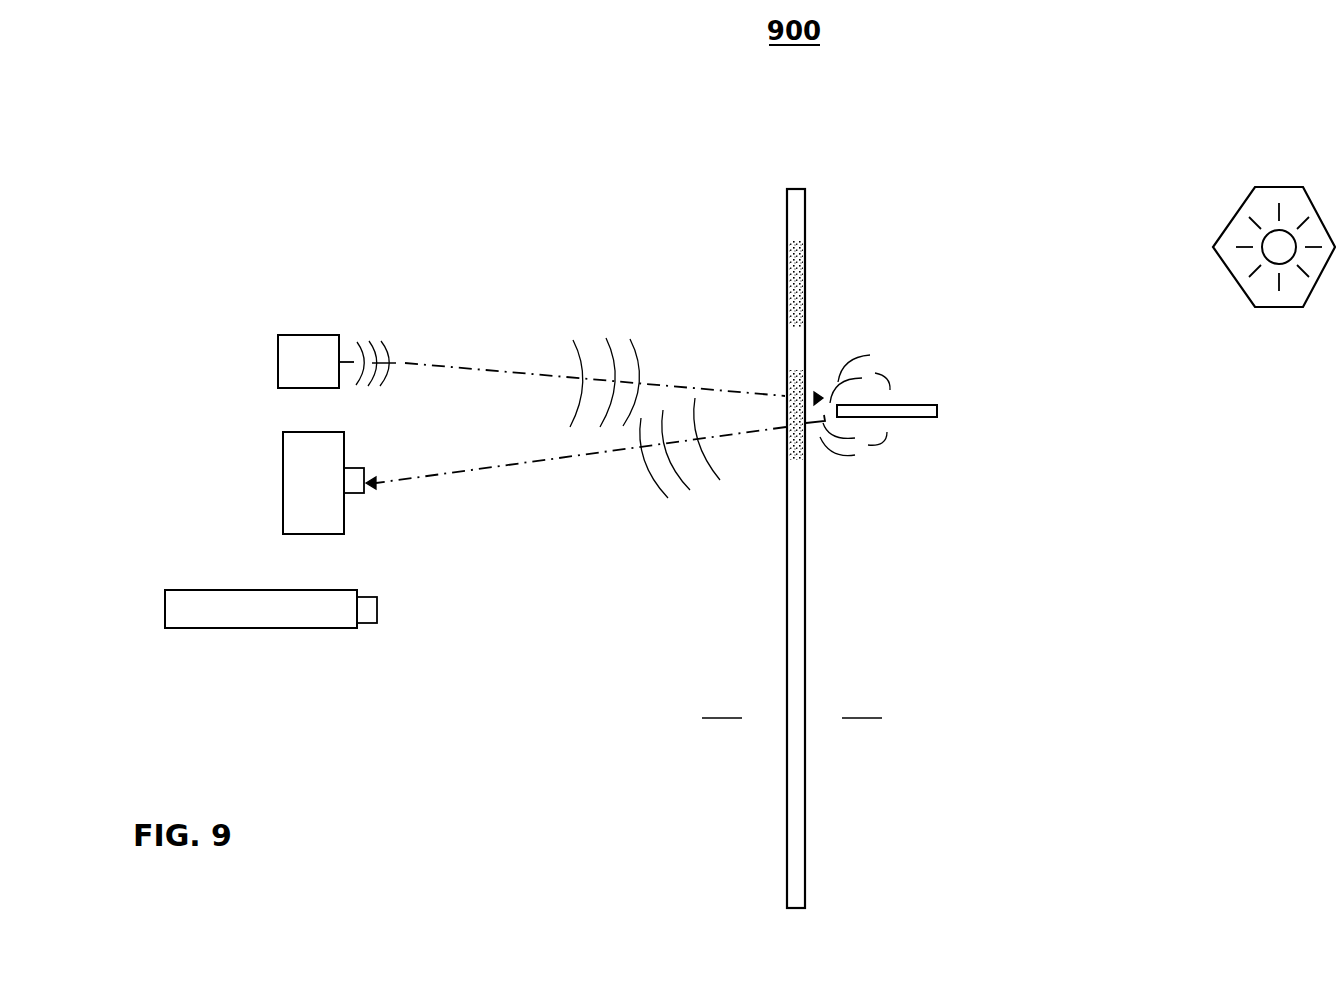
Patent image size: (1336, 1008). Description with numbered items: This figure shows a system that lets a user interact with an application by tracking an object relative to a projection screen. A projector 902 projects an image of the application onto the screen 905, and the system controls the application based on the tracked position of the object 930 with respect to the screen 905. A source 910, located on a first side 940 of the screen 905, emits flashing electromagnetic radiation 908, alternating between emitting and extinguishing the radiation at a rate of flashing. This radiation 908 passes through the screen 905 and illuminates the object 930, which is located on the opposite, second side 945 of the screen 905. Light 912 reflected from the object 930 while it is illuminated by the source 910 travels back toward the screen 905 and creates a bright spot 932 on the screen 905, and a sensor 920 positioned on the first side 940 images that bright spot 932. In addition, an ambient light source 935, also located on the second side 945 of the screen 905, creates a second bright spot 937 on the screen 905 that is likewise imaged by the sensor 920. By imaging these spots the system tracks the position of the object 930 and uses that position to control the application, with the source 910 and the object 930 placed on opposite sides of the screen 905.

The projector 902 is at (271, 609).
The screen 905 is at (858, 569).
The flashing electromagnetic radiation 908 is at (516, 372).
The source 910 is at (337, 361).
The reflected light 912 is at (551, 465).
The sensor 920 is at (329, 483).
The object 930 is at (927, 405).
The bright spot 932 is at (795, 390).
The ambient light source 935 is at (1231, 222).
The bright spot 937 is at (796, 262).
The first side 940 is at (723, 705).
The second side 945 is at (863, 705).